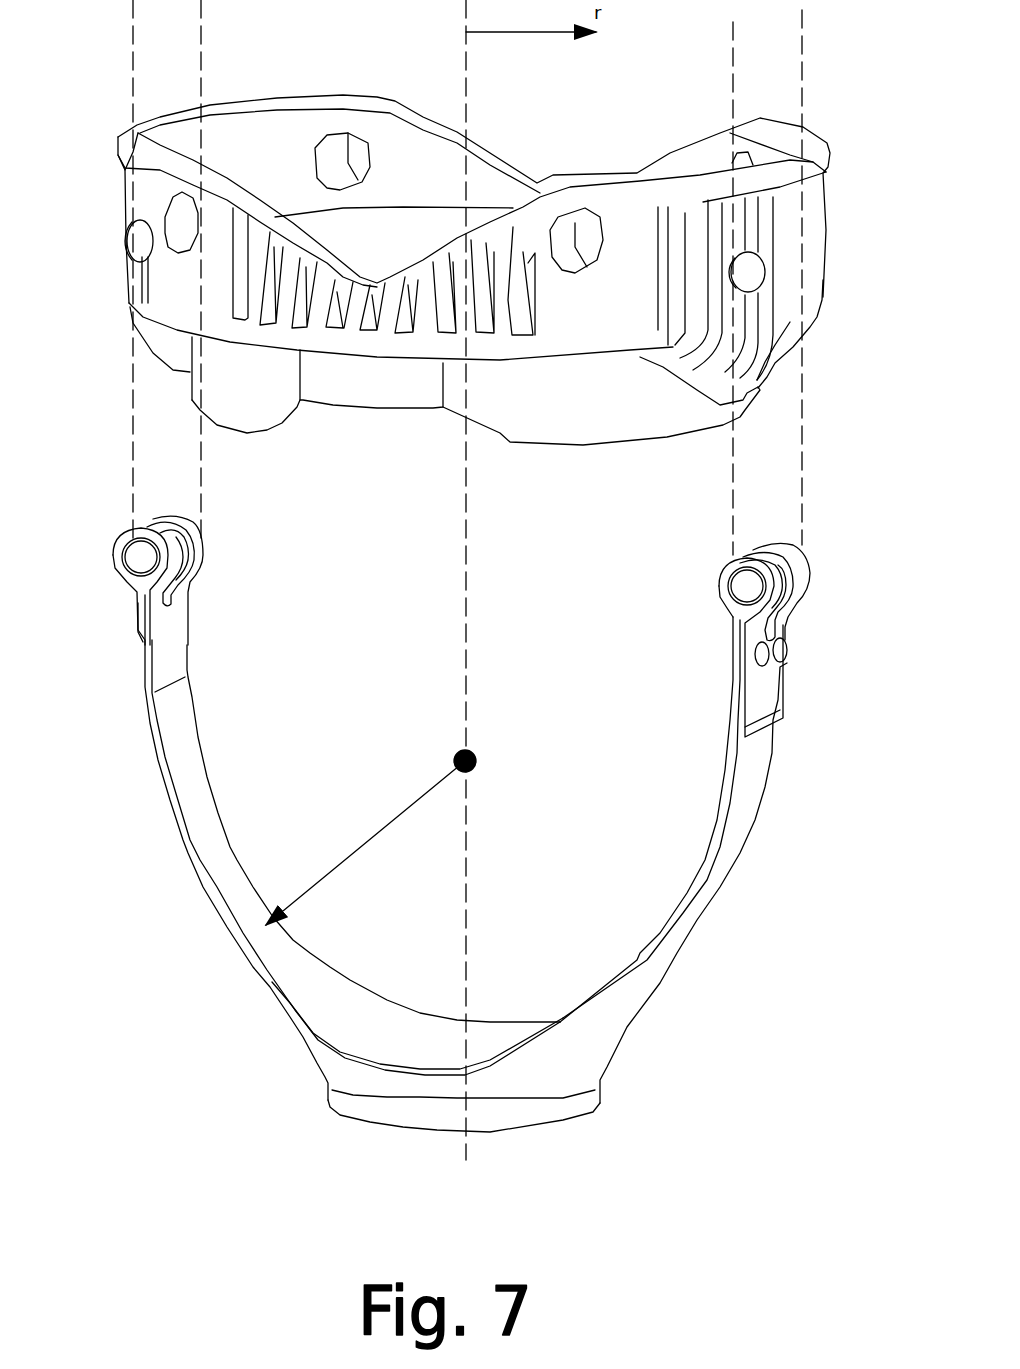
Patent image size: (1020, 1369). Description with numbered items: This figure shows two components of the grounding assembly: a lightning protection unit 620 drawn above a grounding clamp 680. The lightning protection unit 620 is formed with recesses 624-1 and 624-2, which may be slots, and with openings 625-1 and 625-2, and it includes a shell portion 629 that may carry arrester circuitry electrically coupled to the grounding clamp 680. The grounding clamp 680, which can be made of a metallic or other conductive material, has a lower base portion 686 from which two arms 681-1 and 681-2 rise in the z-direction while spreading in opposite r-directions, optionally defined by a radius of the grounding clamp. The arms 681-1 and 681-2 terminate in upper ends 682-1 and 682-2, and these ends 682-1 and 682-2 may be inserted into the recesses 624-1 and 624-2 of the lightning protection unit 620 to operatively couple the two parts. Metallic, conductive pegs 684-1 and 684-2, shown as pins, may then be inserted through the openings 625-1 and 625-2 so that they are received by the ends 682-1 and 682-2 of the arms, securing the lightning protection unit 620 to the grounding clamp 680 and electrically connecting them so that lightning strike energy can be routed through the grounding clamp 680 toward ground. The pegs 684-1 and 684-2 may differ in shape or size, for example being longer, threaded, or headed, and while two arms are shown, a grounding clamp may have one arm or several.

The lightning protection unit 620 is at (820, 435).
The opening 625-1 is at (772, 290).
The opening 625-2 is at (132, 265).
The recess 624-1 is at (790, 372).
The recess 624-2 is at (140, 362).
The shell portion 629 is at (582, 434).
The grounding clamp 680 is at (768, 862).
The arm 681-1 is at (693, 870).
The arm 681-2 is at (208, 812).
The end 682-1 is at (803, 566).
The end 682-2 is at (200, 545).
The peg 684-1 is at (742, 596).
The peg 684-2 is at (138, 565).
The base portion 686 is at (350, 1112).